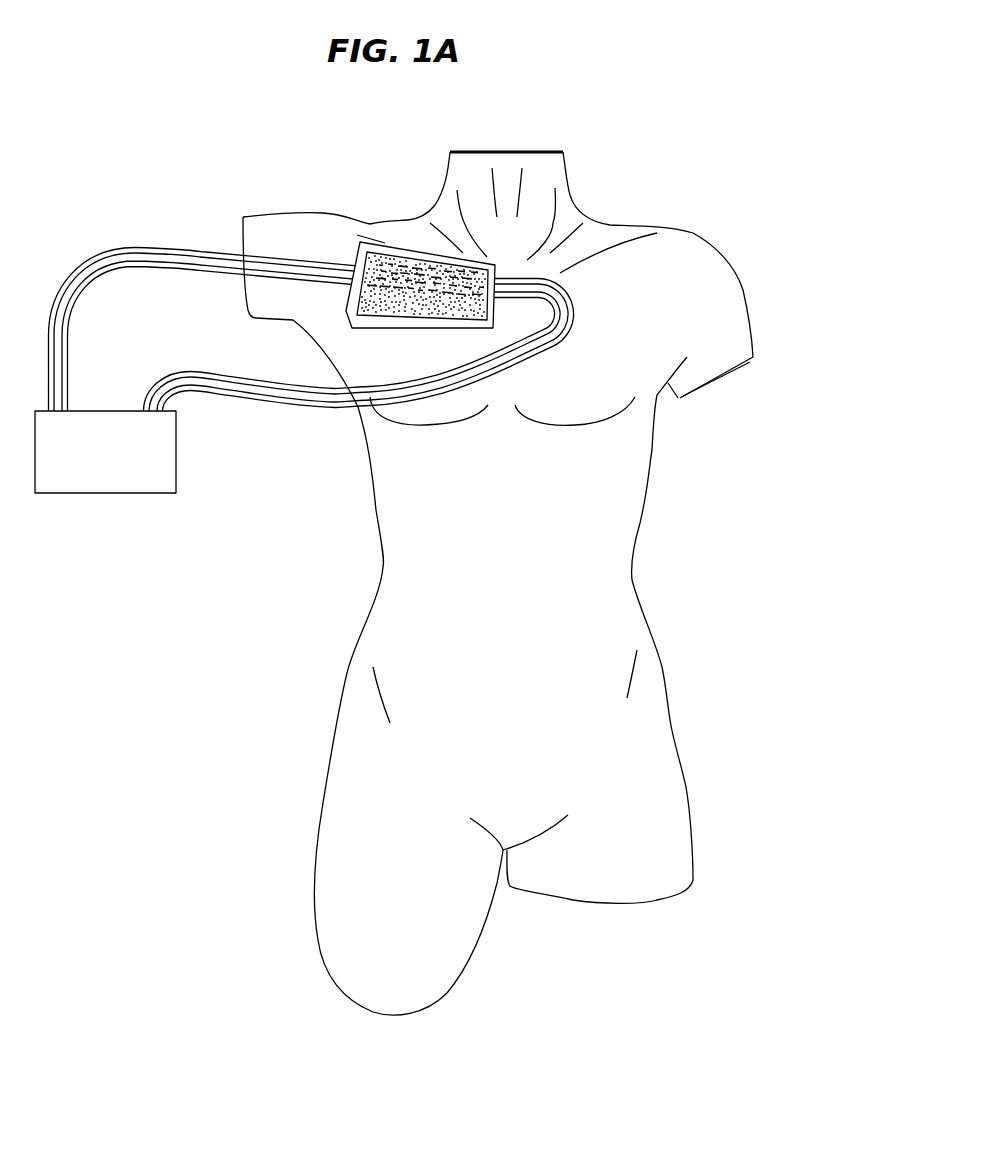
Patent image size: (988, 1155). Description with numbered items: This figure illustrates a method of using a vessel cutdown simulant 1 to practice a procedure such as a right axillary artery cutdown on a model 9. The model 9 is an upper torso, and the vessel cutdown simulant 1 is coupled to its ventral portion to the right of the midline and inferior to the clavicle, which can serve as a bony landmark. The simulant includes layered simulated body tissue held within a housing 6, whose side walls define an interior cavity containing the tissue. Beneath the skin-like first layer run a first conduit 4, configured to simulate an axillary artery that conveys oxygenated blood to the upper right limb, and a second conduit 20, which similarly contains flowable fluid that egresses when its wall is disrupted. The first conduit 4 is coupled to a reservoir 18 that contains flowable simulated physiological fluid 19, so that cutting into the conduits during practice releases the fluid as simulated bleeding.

The vessel cutdown simulant 1 is at (505, 335).
The first conduit 4 is at (470, 273).
The housing 6 is at (452, 323).
The model 9 is at (755, 227).
The reservoir 18 is at (142, 493).
The flowable simulated physiological fluid 19 is at (62, 478).
The second conduit 20 is at (380, 287).